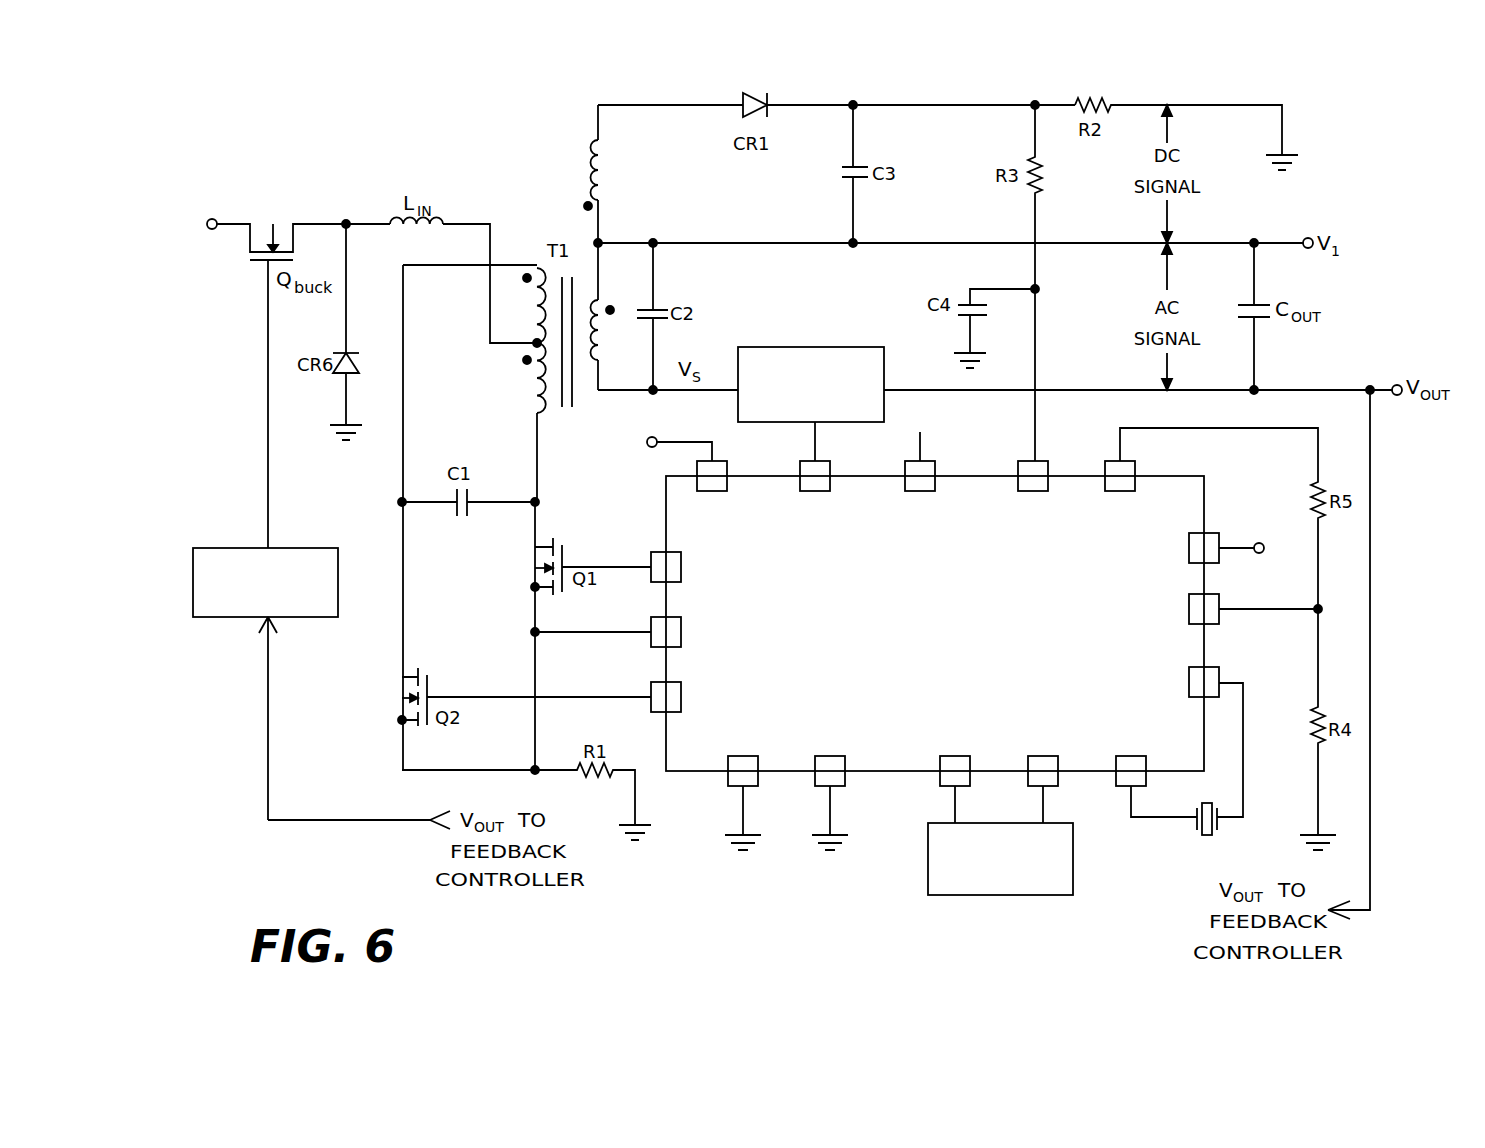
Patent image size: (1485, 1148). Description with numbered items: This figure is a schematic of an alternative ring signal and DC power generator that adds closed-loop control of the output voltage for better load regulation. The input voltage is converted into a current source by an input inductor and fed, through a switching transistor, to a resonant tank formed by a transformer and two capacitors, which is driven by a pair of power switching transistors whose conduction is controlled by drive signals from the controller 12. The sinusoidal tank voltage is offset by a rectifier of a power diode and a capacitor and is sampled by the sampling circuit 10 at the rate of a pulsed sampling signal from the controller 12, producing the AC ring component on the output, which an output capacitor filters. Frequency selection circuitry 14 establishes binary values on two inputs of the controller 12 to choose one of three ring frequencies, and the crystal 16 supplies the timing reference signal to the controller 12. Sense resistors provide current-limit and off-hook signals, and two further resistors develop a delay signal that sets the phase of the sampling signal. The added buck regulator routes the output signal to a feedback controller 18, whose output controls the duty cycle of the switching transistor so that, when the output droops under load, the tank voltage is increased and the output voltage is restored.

The sampling circuit 10 is at (787, 347).
The controller 12 is at (897, 771).
The frequency selection circuitry 14 is at (1073, 881).
The crystal 16 is at (1207, 838).
The feedback controller 18 is at (238, 548).